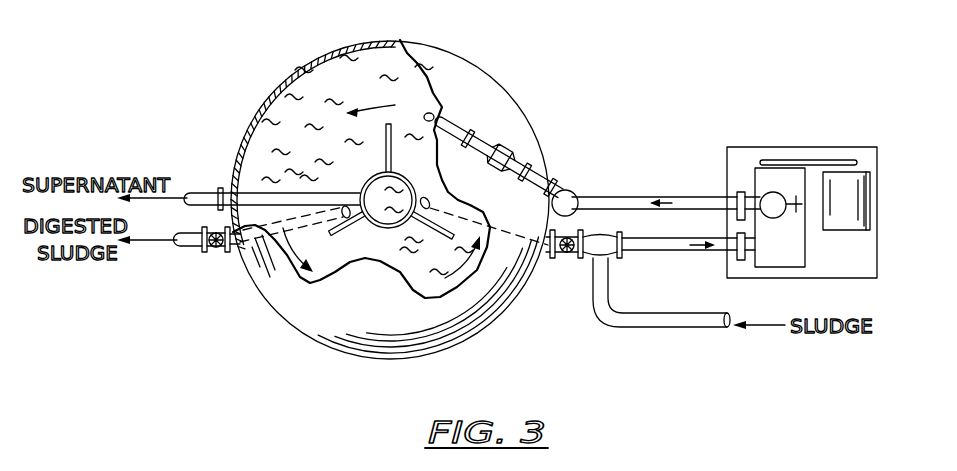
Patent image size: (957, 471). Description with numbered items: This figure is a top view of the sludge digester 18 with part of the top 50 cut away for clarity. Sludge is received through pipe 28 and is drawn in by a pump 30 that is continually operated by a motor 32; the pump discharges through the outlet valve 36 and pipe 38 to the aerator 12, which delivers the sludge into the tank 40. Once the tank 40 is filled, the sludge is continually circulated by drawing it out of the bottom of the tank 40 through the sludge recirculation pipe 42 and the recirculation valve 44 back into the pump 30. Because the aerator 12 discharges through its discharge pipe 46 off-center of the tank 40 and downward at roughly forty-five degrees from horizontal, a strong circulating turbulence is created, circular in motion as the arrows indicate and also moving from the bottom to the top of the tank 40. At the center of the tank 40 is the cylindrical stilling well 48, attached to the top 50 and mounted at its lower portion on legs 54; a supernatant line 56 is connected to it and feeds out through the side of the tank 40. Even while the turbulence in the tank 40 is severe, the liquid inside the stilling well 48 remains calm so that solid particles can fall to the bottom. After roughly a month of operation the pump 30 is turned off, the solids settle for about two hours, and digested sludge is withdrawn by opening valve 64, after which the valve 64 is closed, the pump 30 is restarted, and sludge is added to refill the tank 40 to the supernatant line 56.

The aerator 12 is at (533, 136).
The sludge digester 18 is at (598, 86).
The pipe 28 is at (665, 314).
The pump 30 is at (785, 268).
The motor 32 is at (870, 205).
The outlet valve 36 is at (771, 218).
The pipe 38 is at (625, 200).
The tank 40 is at (250, 119).
The sludge recirculation pipe 42 is at (553, 265).
The recirculation valve 44 is at (568, 259).
The discharge pipe 46 is at (424, 122).
The stilling well 48 is at (368, 176).
The top 50 is at (295, 310).
The legs 54 is at (386, 137).
The supernatant line 56 is at (207, 193).
The valve 64 is at (216, 252).